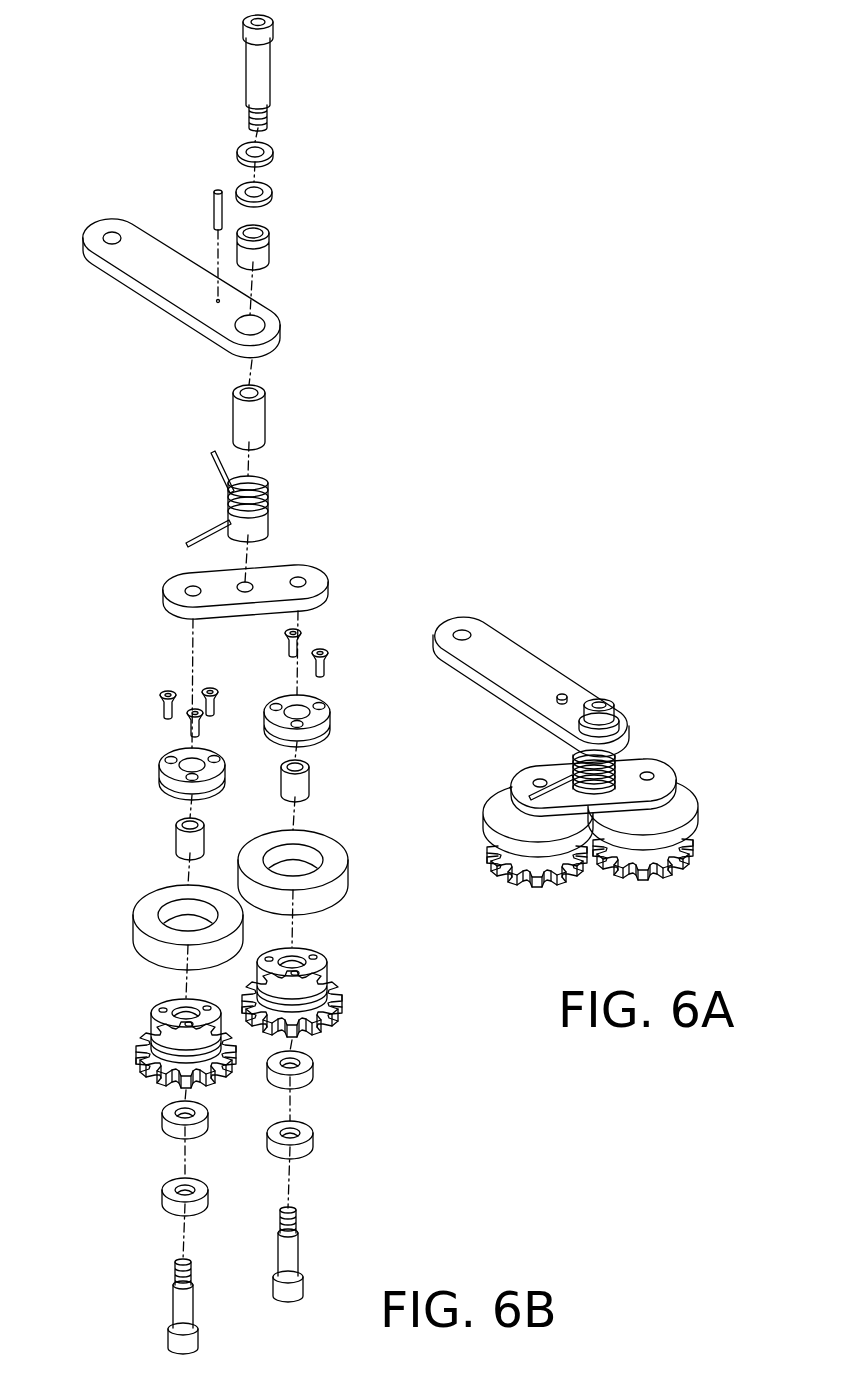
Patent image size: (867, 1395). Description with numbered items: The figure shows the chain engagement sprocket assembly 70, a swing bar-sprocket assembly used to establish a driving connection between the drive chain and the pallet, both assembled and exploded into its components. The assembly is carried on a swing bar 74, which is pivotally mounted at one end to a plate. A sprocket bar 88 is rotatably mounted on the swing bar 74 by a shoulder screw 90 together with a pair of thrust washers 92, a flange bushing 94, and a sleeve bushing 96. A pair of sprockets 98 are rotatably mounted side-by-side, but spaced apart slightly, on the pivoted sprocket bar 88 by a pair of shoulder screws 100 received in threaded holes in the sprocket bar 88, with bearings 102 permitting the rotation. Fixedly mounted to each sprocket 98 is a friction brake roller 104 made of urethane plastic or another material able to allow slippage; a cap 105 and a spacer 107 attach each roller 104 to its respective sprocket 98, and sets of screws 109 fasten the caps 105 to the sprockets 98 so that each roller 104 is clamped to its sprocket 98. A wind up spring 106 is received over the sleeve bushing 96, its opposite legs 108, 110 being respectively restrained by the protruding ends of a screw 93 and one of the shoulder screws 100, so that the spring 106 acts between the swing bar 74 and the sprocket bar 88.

In FIG. 6B, the chain engagement sprocket assembly 70 is at (52, 111).
In FIG. 6A, the chain engagement sprocket assembly 70 is at (556, 636).
In FIG. 6B, the swing bar 74 is at (125, 288).
In FIG. 6A, the swing bar 74 is at (445, 618).
In FIG. 6B, the sprocket bar 88 is at (328, 567).
In FIG. 6A, the sprocket bar 88 is at (633, 770).
In FIG. 6B, the shoulder screw 90 is at (273, 43).
In FIG. 6B, the thrust washers 92 is at (275, 153).
In FIG. 6B, the screw 93 is at (210, 212).
In FIG. 6B, the flange bushing 94 is at (270, 248).
In FIG. 6B, the sleeve bushing 96 is at (267, 412).
In FIG. 6B, the sprockets 98 is at (152, 1022).
In FIG. 6A, the sprockets 98 is at (518, 878).
In FIG. 6B, the shoulder screws 100 is at (177, 1298).
In FIG. 6A, the shoulder screws 100 is at (647, 770).
In FIG. 6B, the bearings 102 is at (163, 1123).
In FIG. 6B, the friction brake roller 104 is at (142, 898).
In FIG. 6A, the friction brake roller 104 is at (500, 797).
In FIG. 6B, the cap 105 is at (158, 767).
In FIG. 6B, the wind up spring 106 is at (268, 517).
In FIG. 6A, the wind up spring 106 is at (573, 763).
In FIG. 6B, the spacer 107 is at (177, 830).
In FIG. 6B, the spring leg 108 is at (212, 470).
In FIG. 6B, the screws 109 is at (195, 728).
In FIG. 6B, the spring leg 110 is at (198, 530).
In FIG. 6A, the spring leg 110 is at (548, 797).